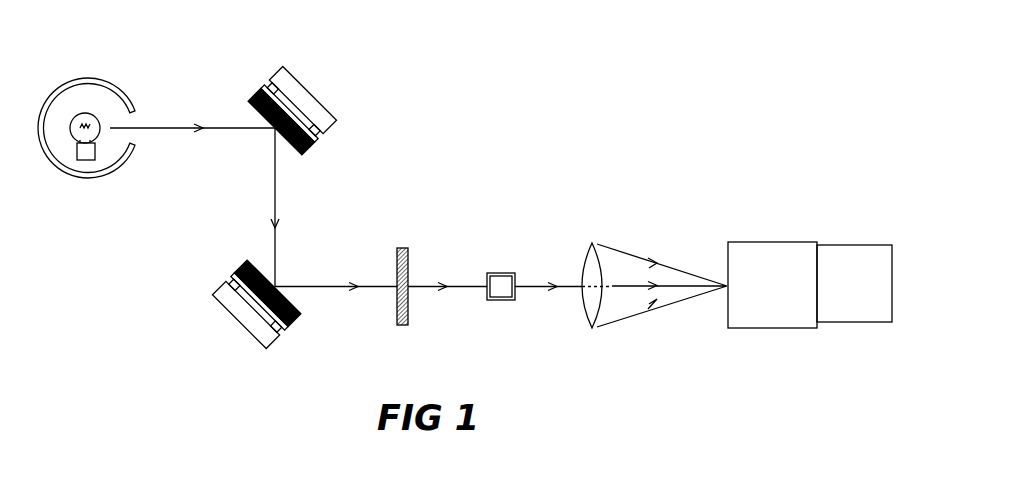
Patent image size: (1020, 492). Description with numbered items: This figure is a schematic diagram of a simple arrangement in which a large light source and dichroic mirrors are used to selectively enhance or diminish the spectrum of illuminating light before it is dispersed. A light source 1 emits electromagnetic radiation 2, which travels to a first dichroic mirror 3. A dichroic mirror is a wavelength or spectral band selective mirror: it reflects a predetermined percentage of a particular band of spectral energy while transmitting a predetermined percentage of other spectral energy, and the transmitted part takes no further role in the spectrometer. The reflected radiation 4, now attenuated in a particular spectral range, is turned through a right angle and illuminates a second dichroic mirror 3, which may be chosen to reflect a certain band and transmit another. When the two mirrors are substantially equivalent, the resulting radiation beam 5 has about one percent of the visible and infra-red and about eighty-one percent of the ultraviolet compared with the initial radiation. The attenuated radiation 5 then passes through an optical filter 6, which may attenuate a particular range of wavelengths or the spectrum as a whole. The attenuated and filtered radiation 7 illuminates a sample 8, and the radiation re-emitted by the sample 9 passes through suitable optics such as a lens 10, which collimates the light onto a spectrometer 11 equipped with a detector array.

The light source 1 is at (105, 83).
The electromagnetic radiation 2 is at (212, 128).
The dichroic mirror 3 is at (298, 88).
The reflected radiation 4 is at (275, 198).
The radiation beam 5 is at (335, 286).
The optical filter 6 is at (397, 313).
The attenuated and filtered radiation 7 is at (458, 286).
The sample 8 is at (505, 295).
The radiation re-emitted by the sample 9 is at (532, 285).
The lens 10 is at (595, 242).
The spectrometer 11 is at (760, 257).